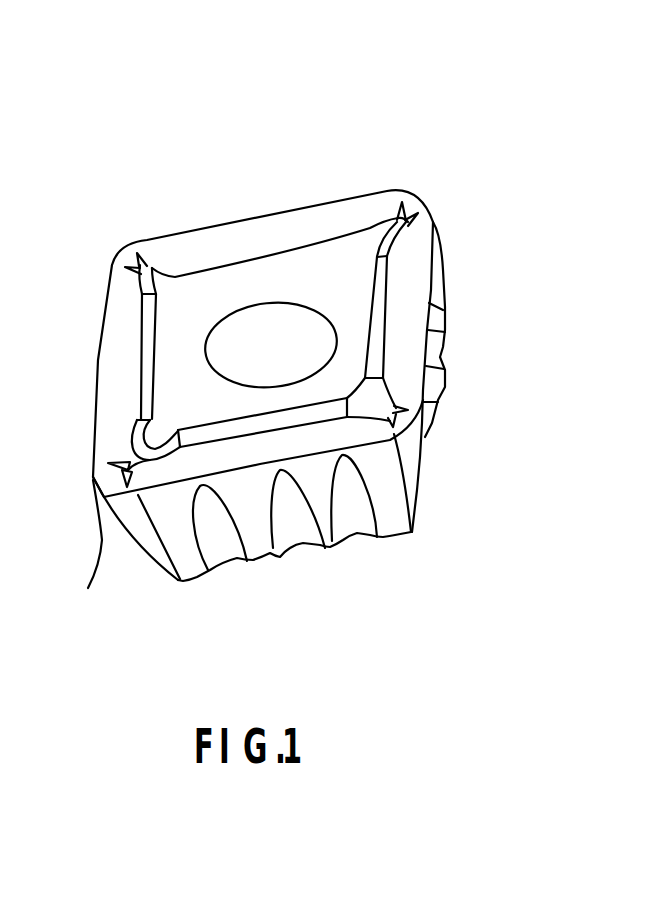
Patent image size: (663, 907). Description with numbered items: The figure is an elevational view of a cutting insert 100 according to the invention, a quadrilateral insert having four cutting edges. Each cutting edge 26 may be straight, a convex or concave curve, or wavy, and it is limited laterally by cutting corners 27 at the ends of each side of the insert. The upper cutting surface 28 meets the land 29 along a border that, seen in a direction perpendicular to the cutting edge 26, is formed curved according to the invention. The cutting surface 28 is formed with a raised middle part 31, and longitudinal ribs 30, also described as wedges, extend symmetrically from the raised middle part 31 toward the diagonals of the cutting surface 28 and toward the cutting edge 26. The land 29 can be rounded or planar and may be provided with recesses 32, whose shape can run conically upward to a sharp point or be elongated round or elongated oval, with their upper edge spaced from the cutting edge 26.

The cutting insert 100 is at (257, 342).
The cutting edge 26 is at (302, 207).
The cutting corners 27 is at (115, 252).
The cutting surface 28 is at (116, 362).
The land 29 is at (248, 497).
The longitudinal ribs 30 is at (103, 490).
The raised middle part 31 is at (338, 282).
The recesses 32 is at (353, 513).